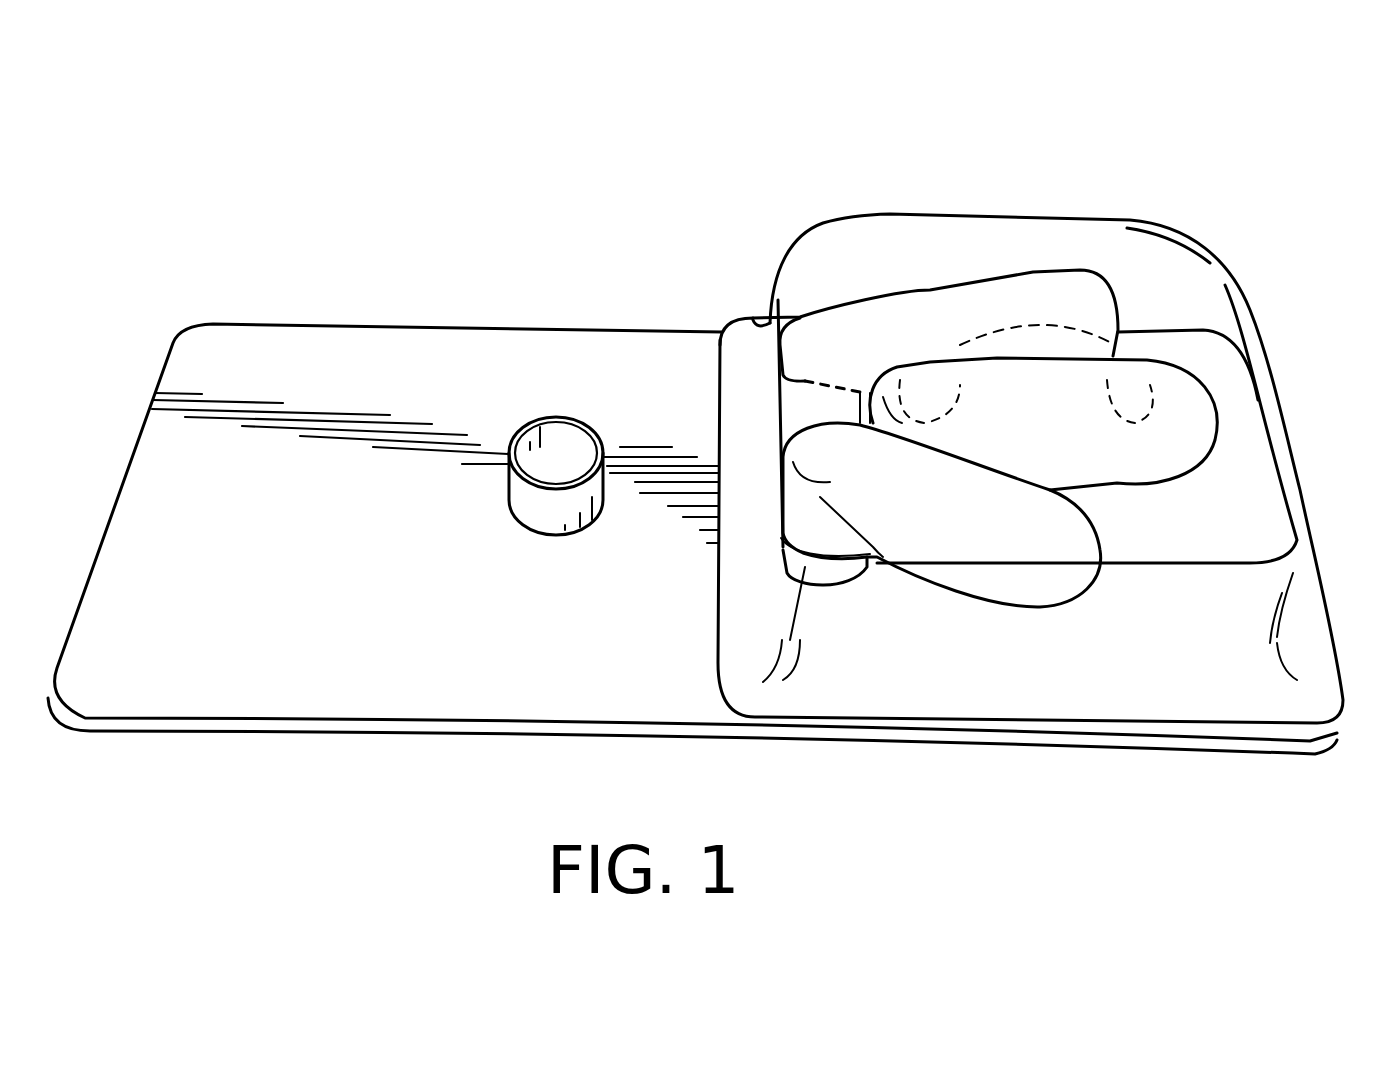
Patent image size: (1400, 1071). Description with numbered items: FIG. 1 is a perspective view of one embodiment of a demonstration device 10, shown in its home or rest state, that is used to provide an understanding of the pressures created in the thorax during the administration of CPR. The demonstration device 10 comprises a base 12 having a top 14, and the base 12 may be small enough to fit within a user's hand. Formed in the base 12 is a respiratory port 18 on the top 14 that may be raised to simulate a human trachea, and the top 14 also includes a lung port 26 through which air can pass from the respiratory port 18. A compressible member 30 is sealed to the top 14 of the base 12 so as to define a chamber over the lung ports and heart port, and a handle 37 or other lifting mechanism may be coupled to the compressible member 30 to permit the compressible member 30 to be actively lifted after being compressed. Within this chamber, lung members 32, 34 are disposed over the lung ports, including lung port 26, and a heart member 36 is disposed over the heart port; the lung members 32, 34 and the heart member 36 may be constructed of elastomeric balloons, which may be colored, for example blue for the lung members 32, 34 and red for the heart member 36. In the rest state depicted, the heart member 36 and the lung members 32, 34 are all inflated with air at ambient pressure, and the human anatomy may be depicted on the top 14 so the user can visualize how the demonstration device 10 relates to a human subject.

The demonstration device 10 is at (760, 167).
The base 12 is at (443, 697).
The top 14 is at (243, 683).
The respiratory port 18 is at (567, 440).
The lung port 26 is at (833, 578).
The compressible member 30 is at (1225, 283).
The lung member 32 is at (1022, 295).
The lung member 34 is at (1050, 583).
The heart member 36 is at (1190, 410).
The handle 37 is at (1258, 330).